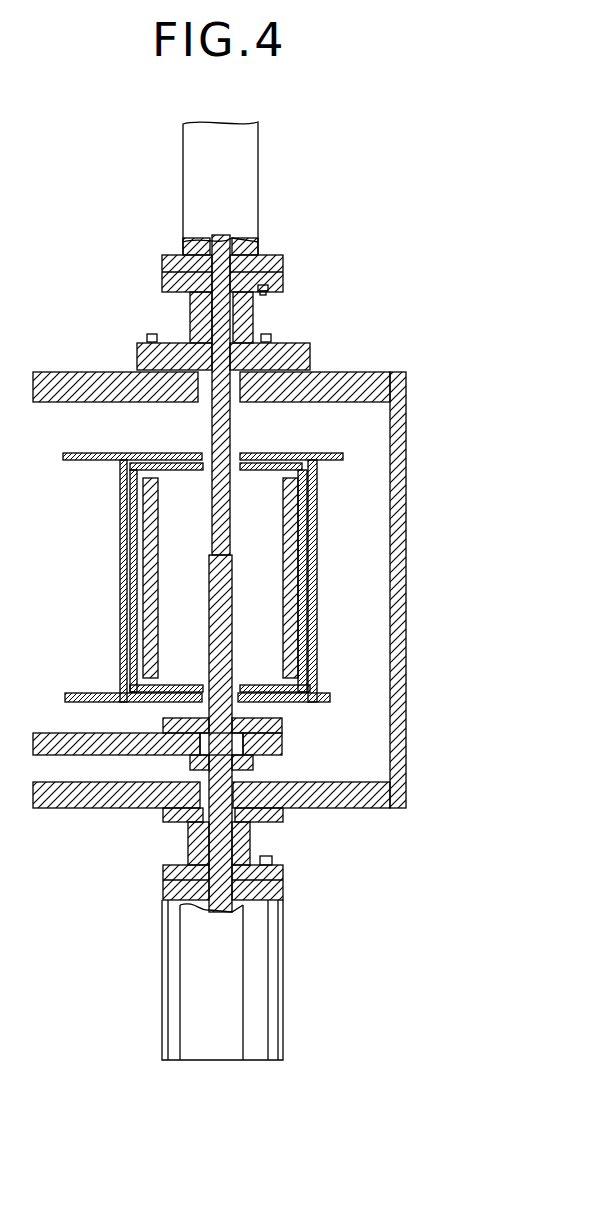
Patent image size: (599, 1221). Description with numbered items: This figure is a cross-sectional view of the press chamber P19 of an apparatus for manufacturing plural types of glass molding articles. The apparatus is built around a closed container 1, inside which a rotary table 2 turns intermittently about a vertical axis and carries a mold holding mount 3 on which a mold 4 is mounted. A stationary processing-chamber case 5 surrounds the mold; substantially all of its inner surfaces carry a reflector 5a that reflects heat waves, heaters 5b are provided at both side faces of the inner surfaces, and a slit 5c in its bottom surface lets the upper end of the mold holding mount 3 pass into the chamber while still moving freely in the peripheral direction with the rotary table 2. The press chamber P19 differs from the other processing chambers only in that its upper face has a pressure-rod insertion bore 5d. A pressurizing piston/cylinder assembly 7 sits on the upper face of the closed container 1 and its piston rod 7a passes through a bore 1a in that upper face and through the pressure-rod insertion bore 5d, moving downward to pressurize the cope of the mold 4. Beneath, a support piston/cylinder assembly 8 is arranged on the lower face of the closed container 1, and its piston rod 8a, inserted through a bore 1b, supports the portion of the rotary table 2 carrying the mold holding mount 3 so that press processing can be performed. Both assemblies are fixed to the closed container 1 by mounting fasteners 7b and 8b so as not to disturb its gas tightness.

The closed container 1 is at (407, 508).
The bore 1a is at (223, 385).
The bore 1b is at (240, 775).
The rotary table 2 is at (42, 732).
The mold holding mount 3 is at (230, 626).
The mold 4 is at (233, 560).
The processing-chamber case 5 is at (318, 452).
The reflector 5a is at (300, 628).
The heaters 5b is at (135, 520).
The slit 5c is at (200, 690).
The pressure-rod insertion bore 5d is at (202, 467).
The pressurizing piston/cylinder assembly 7 is at (258, 172).
The piston rod 7a is at (215, 440).
The mounting fastener 7b is at (248, 308).
The support piston/cylinder assembly 8 is at (283, 990).
The piston rod 8a is at (190, 840).
The mounting fastener 8b is at (248, 836).
The press chamber P19 is at (165, 568).